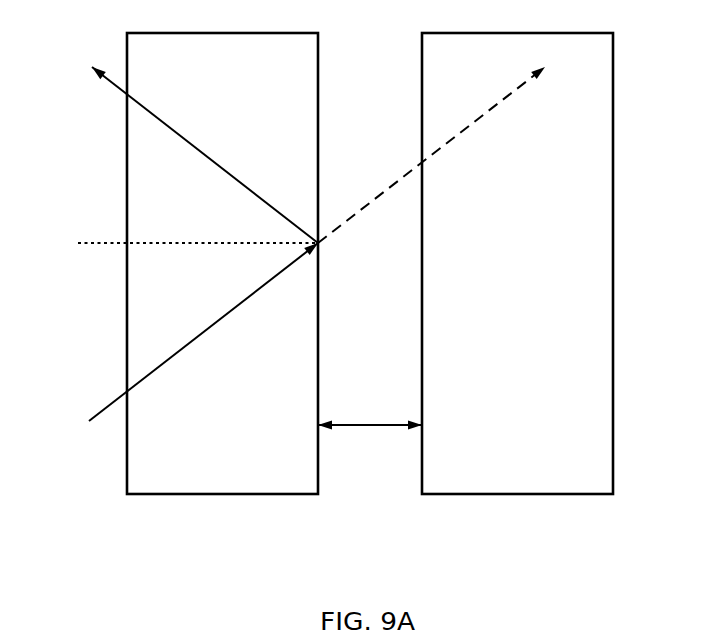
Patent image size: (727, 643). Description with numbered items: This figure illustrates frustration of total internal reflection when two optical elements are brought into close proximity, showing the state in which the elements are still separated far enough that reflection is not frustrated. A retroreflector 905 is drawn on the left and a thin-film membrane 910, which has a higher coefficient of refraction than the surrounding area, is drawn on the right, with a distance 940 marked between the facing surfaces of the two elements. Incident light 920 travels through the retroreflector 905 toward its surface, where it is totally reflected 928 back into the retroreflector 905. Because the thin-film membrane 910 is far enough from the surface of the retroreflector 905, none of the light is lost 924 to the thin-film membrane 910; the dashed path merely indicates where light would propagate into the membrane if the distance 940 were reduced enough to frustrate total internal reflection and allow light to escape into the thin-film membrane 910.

The retroreflector 905 is at (258, 482).
The thin-film membrane 910 is at (537, 480).
The incident light 920 is at (118, 400).
The light lost to the thin-film membrane 924 is at (447, 143).
The totally reflected light 928 is at (157, 118).
The distance 940 is at (375, 428).